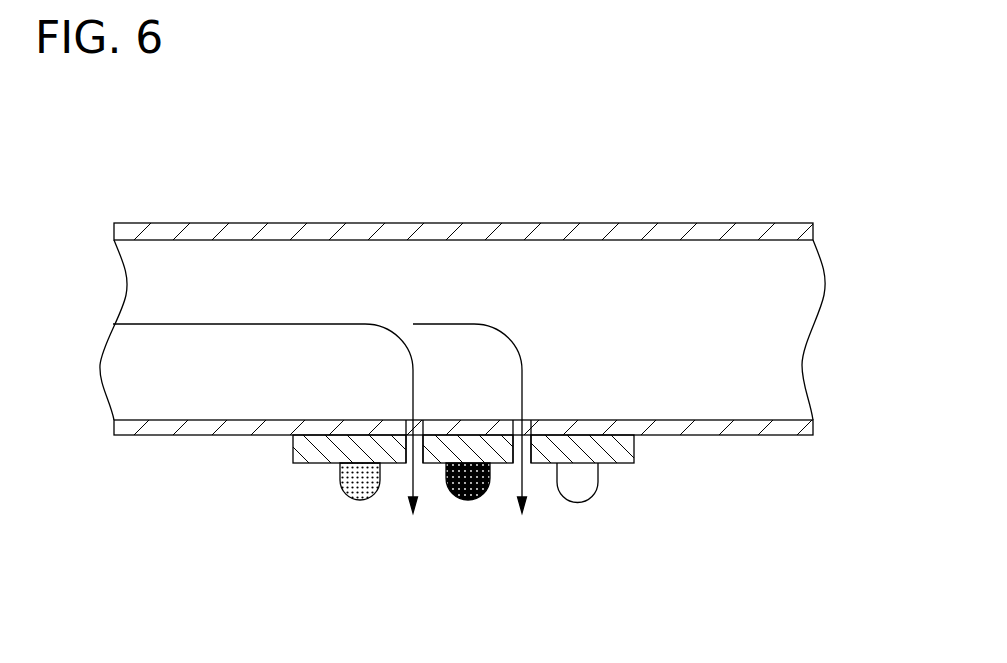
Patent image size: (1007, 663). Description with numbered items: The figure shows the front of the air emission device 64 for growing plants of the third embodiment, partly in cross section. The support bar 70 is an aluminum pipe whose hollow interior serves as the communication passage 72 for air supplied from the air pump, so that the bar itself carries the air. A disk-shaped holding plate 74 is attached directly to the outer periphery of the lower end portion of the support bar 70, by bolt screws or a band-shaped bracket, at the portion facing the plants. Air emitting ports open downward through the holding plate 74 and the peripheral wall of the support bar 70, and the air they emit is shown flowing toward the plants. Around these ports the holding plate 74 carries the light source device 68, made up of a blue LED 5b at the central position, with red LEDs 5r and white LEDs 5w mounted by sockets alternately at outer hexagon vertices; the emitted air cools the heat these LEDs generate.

The air emission device for growing plants 64 is at (462, 289).
The support bar 70 is at (620, 223).
The communication passage 72 is at (268, 278).
The holding plate 74 is at (620, 465).
The light source device 68 is at (445, 521).
The red LED 5r is at (342, 490).
The blue LED 5b is at (465, 500).
The white LED 5w is at (592, 492).